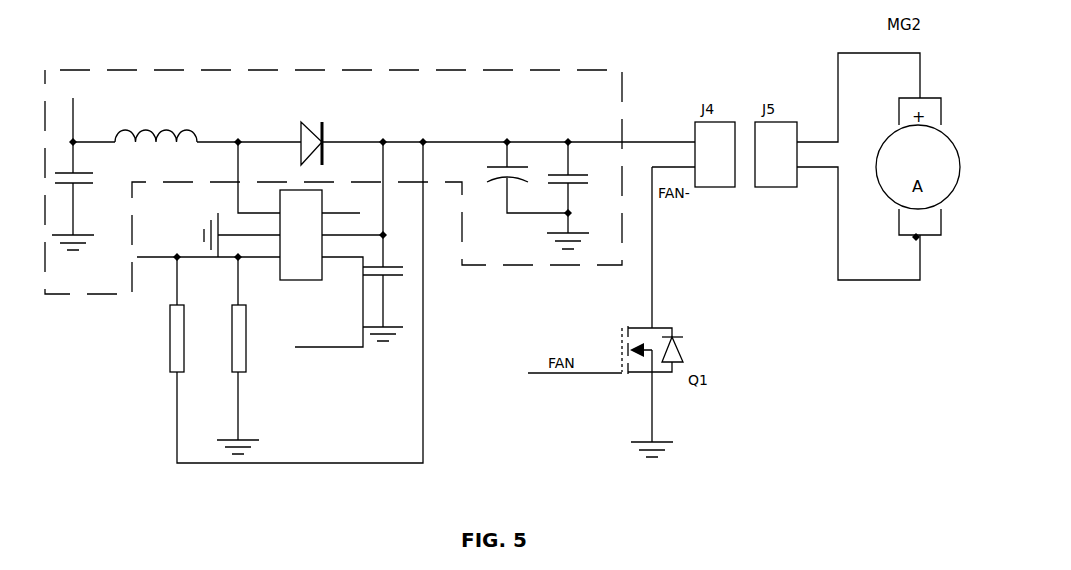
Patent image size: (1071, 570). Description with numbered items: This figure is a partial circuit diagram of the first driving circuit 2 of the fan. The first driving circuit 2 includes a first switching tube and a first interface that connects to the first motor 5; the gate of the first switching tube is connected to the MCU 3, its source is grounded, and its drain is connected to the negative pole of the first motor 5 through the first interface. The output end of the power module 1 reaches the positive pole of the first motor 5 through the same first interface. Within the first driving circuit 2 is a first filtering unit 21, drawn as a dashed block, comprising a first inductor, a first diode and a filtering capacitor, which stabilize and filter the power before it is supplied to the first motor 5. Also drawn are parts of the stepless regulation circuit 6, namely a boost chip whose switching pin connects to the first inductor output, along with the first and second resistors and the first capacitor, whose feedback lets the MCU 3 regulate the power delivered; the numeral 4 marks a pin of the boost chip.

The first filtering unit 21 is at (52, 295).
The power module 1 is at (516, 254).
The first driving circuit 2 is at (499, 277).
The MCU 3 is at (392, 268).
The pin 4 is at (330, 297).
The first motor 5 is at (352, 233).
The stepless regulation circuit 6 is at (343, 211).